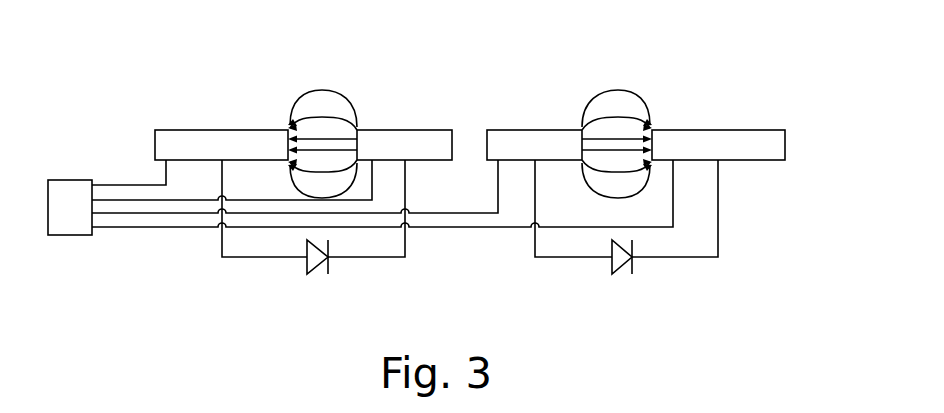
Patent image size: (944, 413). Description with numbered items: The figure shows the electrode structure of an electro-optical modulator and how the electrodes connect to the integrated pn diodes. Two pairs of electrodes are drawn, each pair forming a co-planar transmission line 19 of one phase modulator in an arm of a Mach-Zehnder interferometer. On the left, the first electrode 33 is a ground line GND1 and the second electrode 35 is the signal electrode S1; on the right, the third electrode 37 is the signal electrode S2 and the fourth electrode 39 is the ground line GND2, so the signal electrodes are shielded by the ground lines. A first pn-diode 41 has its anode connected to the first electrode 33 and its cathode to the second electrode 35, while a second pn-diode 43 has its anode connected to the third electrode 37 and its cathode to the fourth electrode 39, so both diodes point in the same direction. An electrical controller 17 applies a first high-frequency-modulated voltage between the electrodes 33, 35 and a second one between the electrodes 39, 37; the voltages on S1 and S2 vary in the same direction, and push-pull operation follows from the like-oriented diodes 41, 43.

The electrical controller 17 is at (70, 207).
The transmission line 19 is at (455, 113).
The first electrode 33 is at (222, 130).
The second electrode 35 is at (403, 130).
The third electrode 37 is at (535, 130).
The fourth electrode 39 is at (718, 130).
The first pn-diode 41 is at (320, 278).
The second pn-diode 43 is at (623, 278).